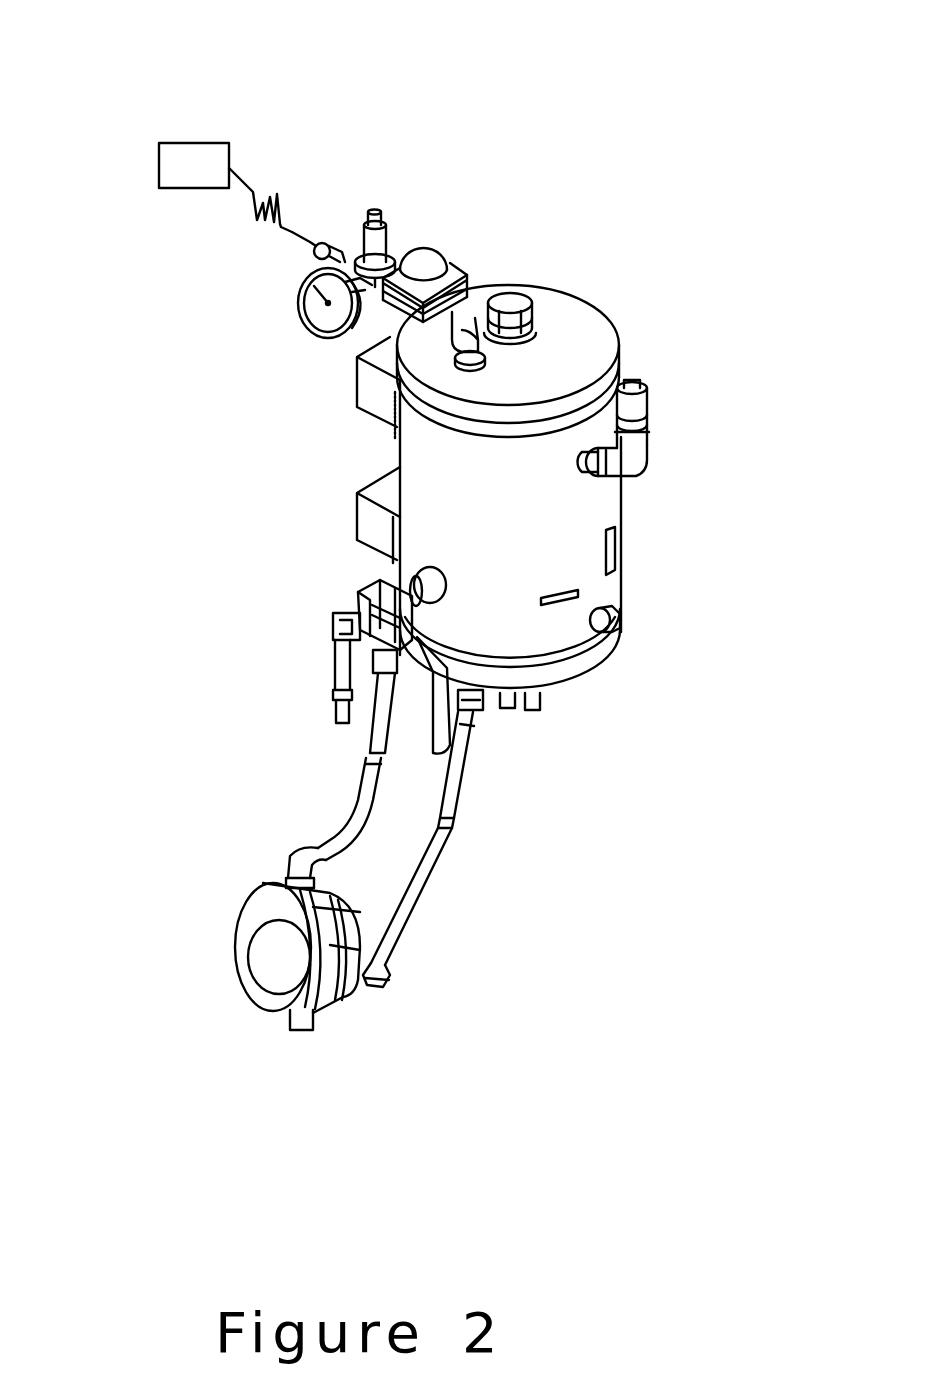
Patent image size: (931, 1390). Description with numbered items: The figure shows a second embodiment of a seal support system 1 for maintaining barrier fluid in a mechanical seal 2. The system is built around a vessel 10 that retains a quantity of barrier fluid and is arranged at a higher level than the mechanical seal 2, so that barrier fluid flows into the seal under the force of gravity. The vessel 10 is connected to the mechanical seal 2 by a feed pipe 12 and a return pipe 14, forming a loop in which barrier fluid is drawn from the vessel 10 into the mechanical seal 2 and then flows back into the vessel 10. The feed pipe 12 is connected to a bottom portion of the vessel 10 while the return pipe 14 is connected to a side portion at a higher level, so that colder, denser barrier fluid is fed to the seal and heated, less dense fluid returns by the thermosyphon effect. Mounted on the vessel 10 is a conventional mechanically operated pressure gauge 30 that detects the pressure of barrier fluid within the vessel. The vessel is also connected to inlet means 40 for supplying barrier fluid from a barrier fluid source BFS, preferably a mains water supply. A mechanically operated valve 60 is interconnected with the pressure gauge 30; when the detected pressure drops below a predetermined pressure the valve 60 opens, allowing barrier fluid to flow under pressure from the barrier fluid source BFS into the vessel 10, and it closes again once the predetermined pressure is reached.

The seal support system 1 is at (243, 380).
The mechanical seal 2 is at (235, 955).
The vessel 10 is at (608, 590).
The feed pipe 12 is at (450, 838).
The return pipe 14 is at (355, 803).
The pressure gauge 30 is at (305, 272).
The inlet means 40 is at (317, 242).
The mechanically operated valve 60 is at (450, 263).
The barrier fluid source BFS is at (175, 150).